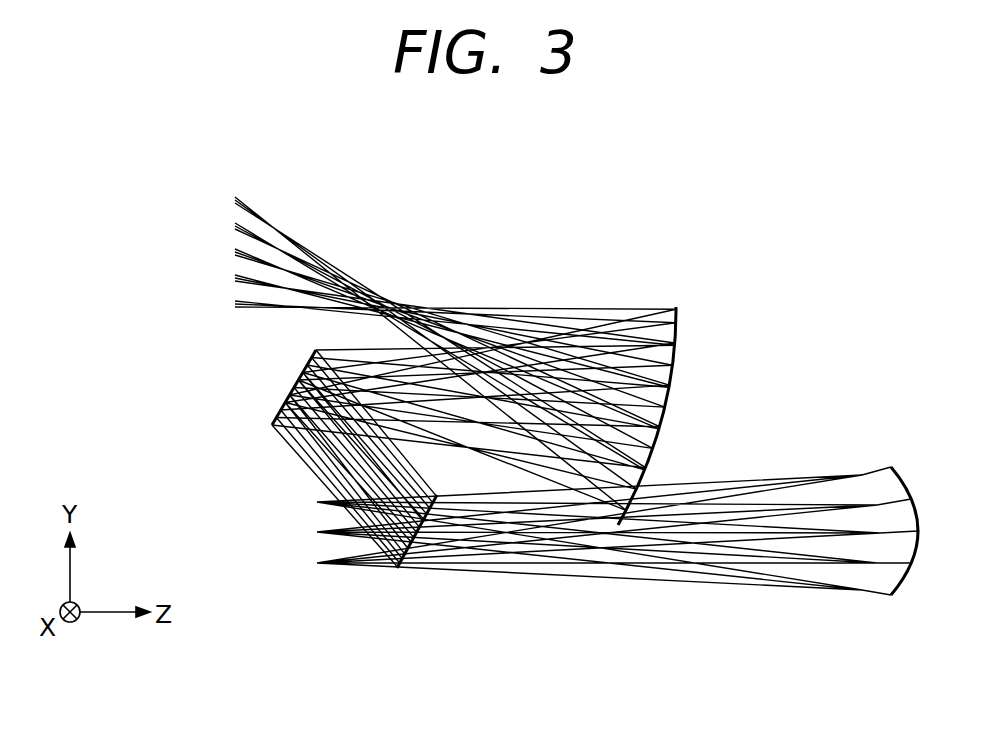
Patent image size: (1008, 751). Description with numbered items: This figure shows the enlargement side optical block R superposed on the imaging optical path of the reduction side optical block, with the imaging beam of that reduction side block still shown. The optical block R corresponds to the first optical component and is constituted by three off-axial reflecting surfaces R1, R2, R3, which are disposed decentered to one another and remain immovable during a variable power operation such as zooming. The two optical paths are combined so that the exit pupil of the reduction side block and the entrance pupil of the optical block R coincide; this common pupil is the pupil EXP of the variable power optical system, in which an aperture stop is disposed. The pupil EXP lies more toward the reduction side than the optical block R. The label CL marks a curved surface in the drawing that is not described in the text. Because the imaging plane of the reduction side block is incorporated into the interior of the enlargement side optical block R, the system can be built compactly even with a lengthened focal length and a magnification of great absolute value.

The enlargement side optical block R is at (491, 441).
The off-axial reflecting surface R1 is at (403, 570).
The off-axial reflecting surface R2 is at (290, 395).
The off-axial reflecting surface R3 is at (676, 355).
The image display surface CL is at (832, 472).
The pupil of the variable power optical system EXP is at (318, 567).